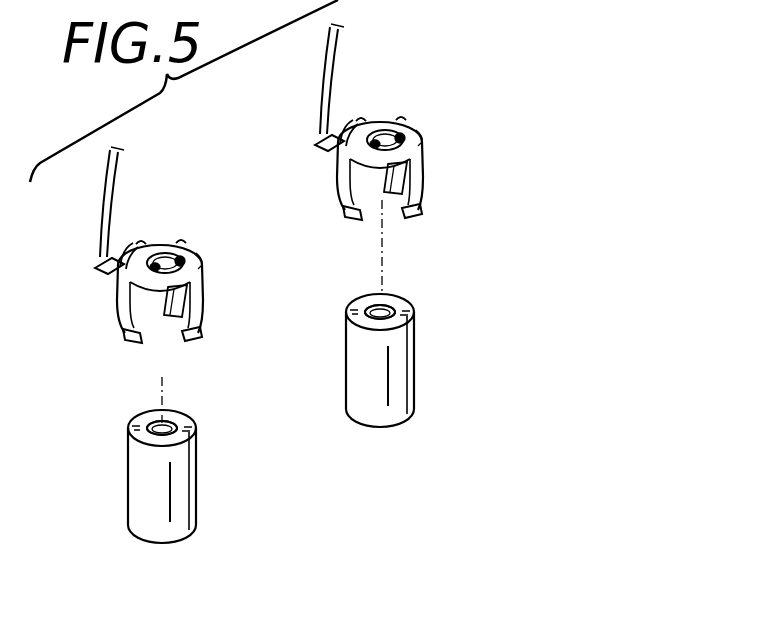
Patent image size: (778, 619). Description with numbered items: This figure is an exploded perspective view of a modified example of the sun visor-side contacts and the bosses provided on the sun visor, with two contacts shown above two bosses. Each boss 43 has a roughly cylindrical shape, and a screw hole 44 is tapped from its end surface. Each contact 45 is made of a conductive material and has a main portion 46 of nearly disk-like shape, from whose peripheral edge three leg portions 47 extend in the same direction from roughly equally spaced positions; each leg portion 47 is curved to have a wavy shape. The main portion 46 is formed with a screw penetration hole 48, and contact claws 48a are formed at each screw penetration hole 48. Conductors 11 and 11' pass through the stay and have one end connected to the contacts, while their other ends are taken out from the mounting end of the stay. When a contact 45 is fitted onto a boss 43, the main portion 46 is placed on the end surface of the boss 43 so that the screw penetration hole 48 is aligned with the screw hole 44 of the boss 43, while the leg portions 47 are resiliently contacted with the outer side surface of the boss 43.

The conductor 11 is at (96, 210).
The conductor 11' is at (311, 87).
The boss 43 is at (190, 477).
The screw hole 44 is at (165, 423).
The contact 45 is at (199, 267).
The main portion 46 is at (198, 270).
The leg portion 47 is at (120, 297).
The screw penetration hole 48 is at (164, 252).
The contact claw 48a is at (143, 250).